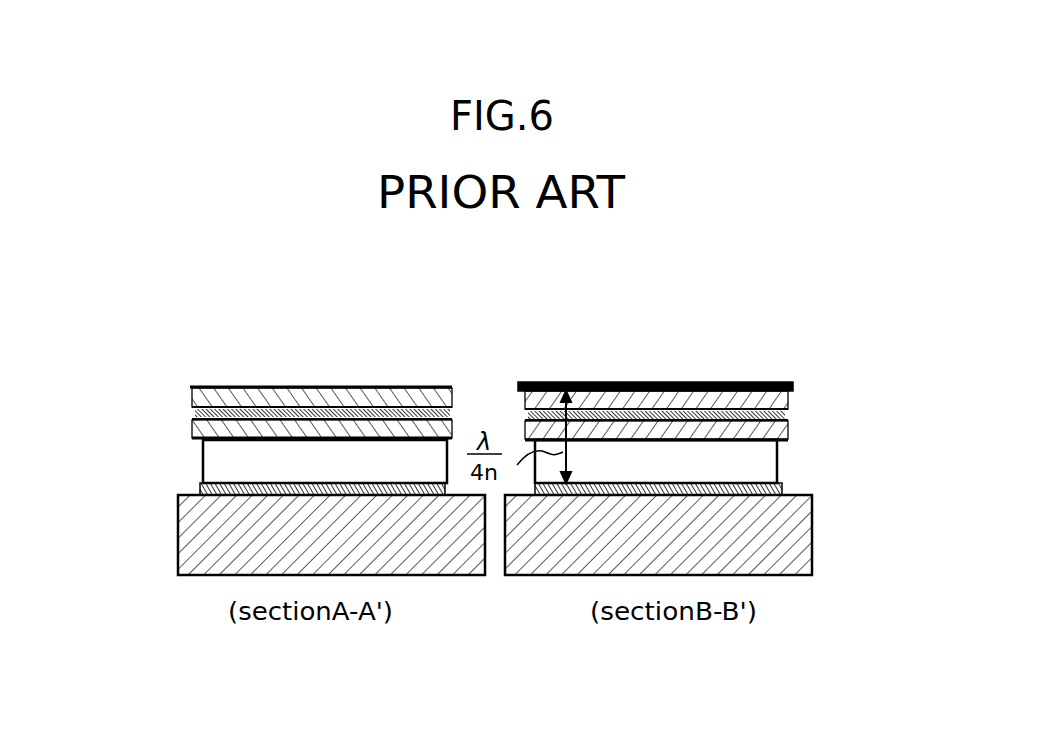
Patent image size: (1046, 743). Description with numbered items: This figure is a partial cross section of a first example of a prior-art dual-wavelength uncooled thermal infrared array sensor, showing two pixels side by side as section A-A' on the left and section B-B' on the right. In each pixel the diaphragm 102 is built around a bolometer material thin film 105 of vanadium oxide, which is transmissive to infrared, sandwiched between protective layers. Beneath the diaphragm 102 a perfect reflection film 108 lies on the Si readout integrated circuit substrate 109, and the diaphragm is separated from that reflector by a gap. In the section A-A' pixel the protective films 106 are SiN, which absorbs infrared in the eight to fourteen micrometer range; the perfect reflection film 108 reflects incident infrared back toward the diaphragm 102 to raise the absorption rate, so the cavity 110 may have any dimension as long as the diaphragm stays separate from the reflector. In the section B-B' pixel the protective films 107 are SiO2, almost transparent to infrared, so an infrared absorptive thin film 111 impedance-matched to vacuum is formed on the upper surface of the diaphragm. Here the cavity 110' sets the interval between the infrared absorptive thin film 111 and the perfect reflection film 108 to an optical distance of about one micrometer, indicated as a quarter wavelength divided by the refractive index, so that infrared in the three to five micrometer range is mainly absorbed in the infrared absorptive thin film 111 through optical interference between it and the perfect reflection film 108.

The diaphragm 102 is at (490, 349).
The bolometer material thin film 105 is at (267, 407).
The protective films 106 is at (247, 387).
The protective films 107 is at (612, 383).
The perfect reflection film 108 is at (200, 492).
The Si readout integrated circuit substrate 109 is at (813, 533).
The cavity 110 is at (283, 461).
The cavity 110' is at (706, 461).
The infrared absorptive thin film 111 is at (563, 383).